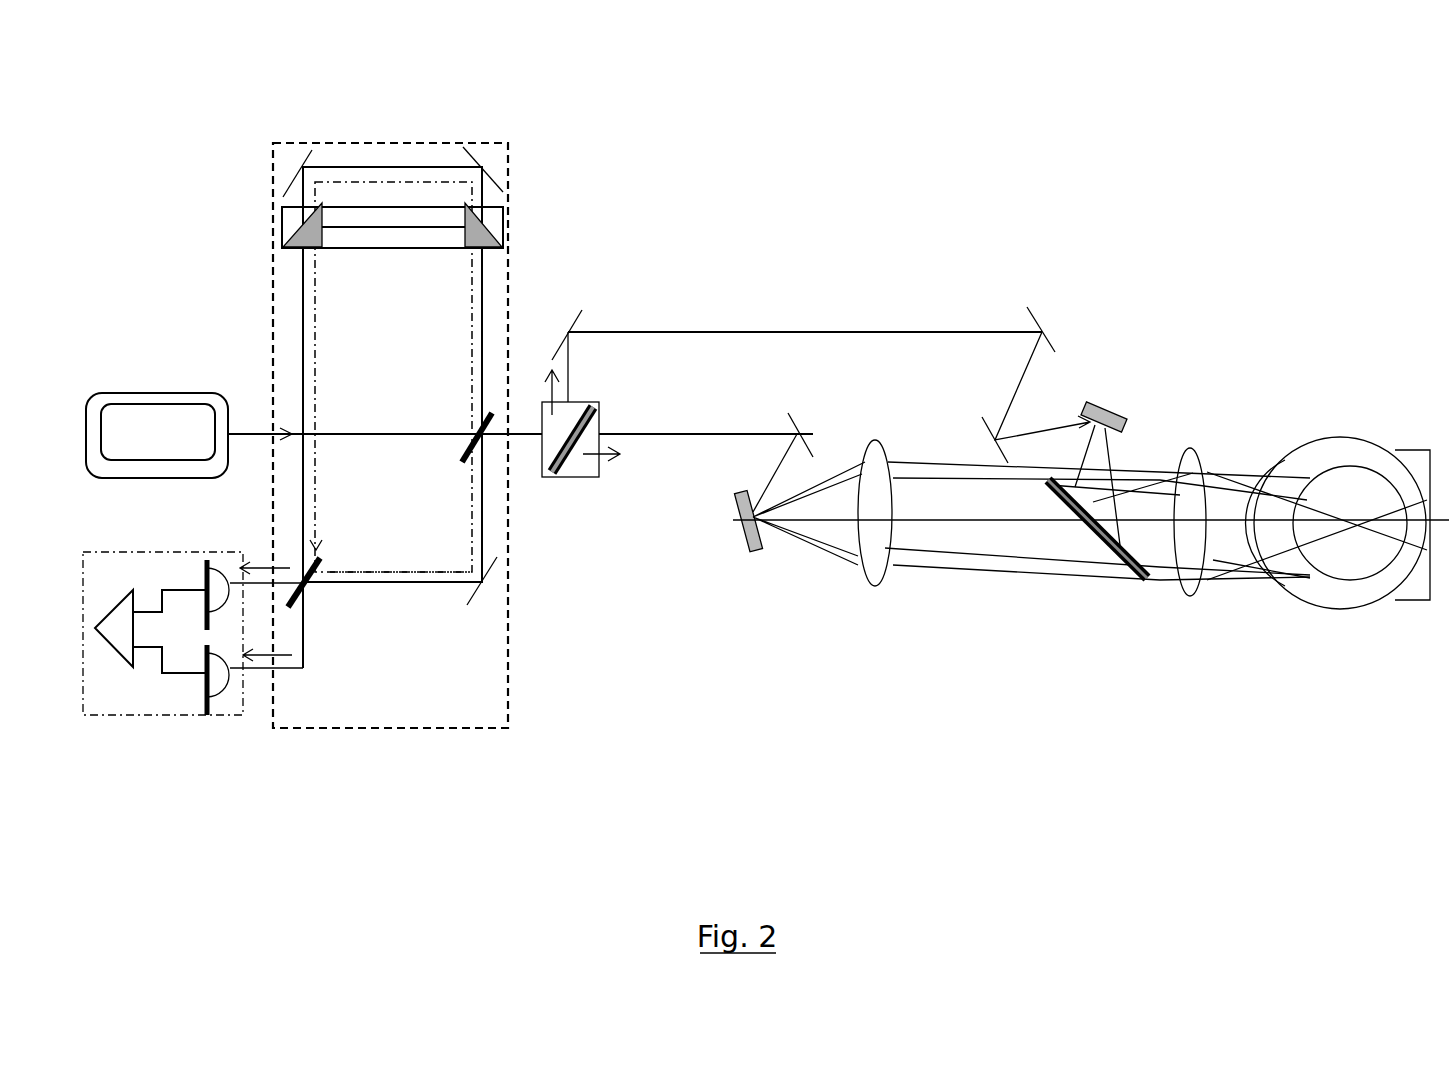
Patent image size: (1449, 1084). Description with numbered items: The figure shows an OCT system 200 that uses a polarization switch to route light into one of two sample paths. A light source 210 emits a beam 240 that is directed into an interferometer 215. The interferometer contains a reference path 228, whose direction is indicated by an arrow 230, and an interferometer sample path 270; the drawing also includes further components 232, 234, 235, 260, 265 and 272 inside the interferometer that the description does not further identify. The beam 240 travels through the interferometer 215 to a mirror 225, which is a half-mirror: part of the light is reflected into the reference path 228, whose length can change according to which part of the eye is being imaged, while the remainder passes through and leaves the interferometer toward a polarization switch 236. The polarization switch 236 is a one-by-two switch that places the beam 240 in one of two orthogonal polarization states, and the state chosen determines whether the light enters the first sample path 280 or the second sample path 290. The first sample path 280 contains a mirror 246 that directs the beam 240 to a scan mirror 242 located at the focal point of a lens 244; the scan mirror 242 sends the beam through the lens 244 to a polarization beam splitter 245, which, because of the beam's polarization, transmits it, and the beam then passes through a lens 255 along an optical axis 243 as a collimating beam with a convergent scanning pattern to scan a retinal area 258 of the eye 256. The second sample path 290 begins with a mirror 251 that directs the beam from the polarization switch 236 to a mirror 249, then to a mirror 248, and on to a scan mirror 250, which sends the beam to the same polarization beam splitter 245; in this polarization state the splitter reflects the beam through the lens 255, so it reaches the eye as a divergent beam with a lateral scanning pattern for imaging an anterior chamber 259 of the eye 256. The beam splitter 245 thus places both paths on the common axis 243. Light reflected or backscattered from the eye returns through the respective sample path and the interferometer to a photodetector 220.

The OCT system 200 is at (893, 818).
The light source 210 is at (181, 447).
The interferometer 215 is at (489, 719).
The photodetector 220 is at (142, 709).
The mirror 225 is at (480, 428).
The reference path 228 is at (362, 167).
The arrow 230 is at (422, 180).
The fold mirror 232 is at (482, 165).
The fold mirror 234 is at (280, 177).
The prism assembly 235 is at (282, 222).
The polarization switch 236 is at (560, 478).
The beam 240 is at (343, 435).
The scan mirror 242 is at (755, 552).
The optical axis 243 is at (1230, 522).
The lens 244 is at (875, 587).
The polarization beam splitter 245 is at (1122, 560).
The mirror 246 is at (797, 436).
The mirror 248 is at (993, 432).
The mirror 249 is at (1042, 332).
The scan mirror 250 is at (1108, 402).
The mirror 251 is at (568, 333).
The lens 255 is at (1190, 598).
The eye 256 is at (1393, 603).
The retinal area 258 is at (1400, 500).
The anterior chamber 259 is at (1285, 460).
The reference path segment 260 is at (420, 573).
The mirror 265 is at (483, 580).
The interferometer sample path 270 is at (392, 582).
The beam splitter 272 is at (305, 593).
The first sample path 280 is at (668, 438).
The second sample path 290 is at (735, 332).